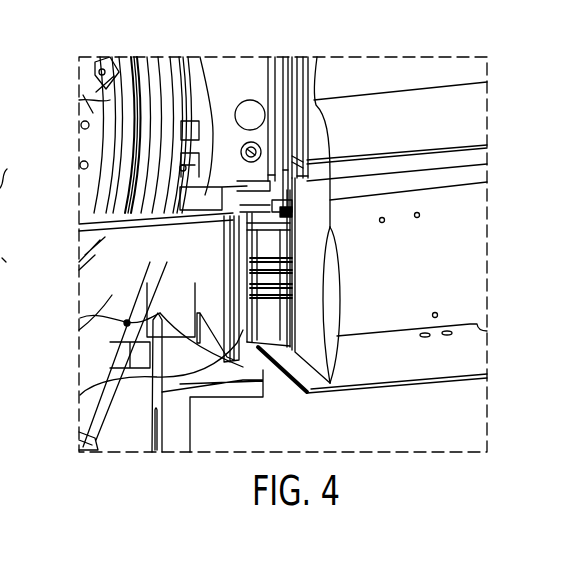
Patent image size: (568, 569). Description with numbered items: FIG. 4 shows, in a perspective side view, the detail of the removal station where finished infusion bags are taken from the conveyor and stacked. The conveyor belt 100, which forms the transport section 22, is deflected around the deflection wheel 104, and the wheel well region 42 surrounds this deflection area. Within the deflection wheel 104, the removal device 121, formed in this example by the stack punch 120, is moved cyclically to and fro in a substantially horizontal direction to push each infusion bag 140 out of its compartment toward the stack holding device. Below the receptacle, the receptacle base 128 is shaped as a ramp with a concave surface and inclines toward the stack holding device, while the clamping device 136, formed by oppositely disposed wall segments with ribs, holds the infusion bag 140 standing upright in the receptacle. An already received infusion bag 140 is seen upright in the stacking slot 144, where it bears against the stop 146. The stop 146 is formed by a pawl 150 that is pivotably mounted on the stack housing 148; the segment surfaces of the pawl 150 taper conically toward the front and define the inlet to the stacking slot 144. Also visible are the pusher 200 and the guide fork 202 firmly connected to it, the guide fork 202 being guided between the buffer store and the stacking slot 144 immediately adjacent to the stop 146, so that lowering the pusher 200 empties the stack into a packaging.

The transport section 22 is at (14, 166).
The wheel well 42 is at (14, 270).
The conveyor belt 100 is at (97, 345).
The deflection wheel 104 is at (107, 103).
The stack punch 120 is at (204, 346).
The removal device 121 is at (221, 246).
The receptacle base 128 is at (268, 367).
The clamping device 136 is at (110, 362).
The infusion bag 140 is at (323, 278).
The stacking slot 144 is at (472, 246).
The stop 146 is at (289, 287).
The stack housing 148 is at (467, 215).
The pawl 150 is at (302, 250).
The pusher 200 is at (401, 60).
The guide fork 202 is at (277, 70).